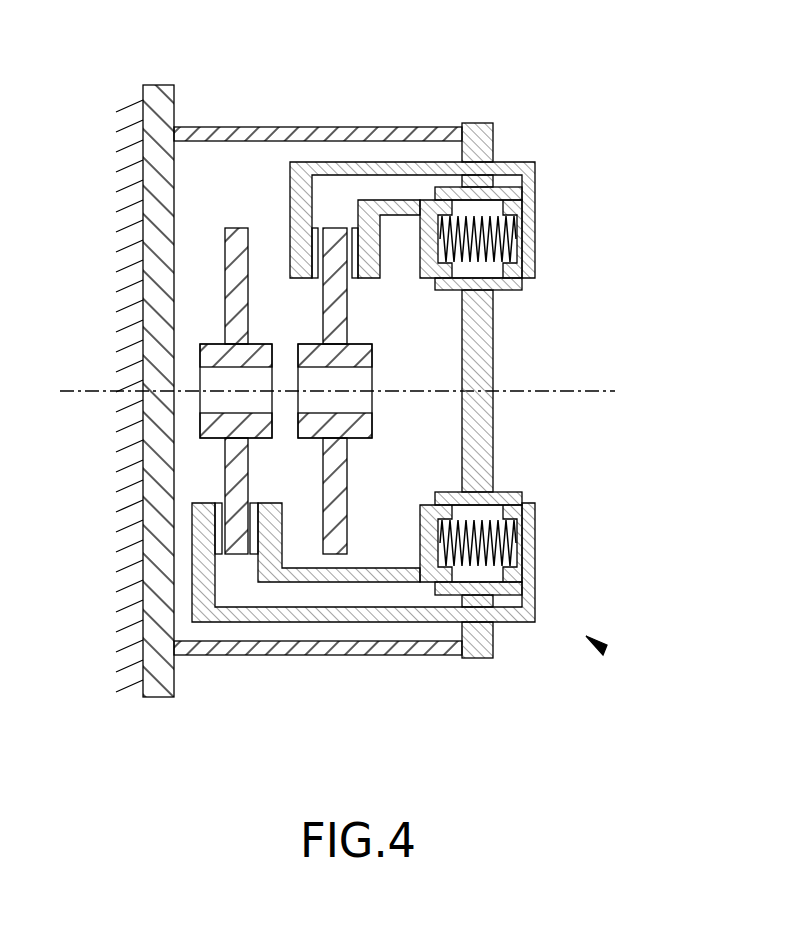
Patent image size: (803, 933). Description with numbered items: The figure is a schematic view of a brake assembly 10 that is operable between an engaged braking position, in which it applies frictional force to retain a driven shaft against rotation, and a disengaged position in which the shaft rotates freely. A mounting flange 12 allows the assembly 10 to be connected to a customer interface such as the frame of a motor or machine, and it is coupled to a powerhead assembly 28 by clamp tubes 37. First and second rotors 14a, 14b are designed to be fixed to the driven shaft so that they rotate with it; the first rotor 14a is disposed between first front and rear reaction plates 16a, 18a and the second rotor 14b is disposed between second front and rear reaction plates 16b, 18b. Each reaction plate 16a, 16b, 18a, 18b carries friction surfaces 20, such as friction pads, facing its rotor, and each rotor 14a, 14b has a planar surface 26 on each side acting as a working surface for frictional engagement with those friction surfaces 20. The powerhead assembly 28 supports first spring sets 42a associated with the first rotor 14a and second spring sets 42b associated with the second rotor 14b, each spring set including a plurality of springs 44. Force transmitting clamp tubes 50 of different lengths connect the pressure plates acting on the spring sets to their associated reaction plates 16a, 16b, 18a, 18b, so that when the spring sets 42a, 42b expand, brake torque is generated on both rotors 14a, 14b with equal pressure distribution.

The assembly 10 is at (603, 650).
The mounting flange 12 is at (161, 85).
The first rotor 14a is at (348, 462).
The second rotor 14b is at (250, 452).
The first front reaction plate 16a is at (380, 250).
The second front reaction plate 16b is at (273, 577).
The first rear reaction plate 18a is at (300, 240).
The second rear reaction plate 18b is at (204, 565).
The friction surfaces 20 is at (313, 278).
The planar surface 26 is at (223, 288).
The powerhead assembly 28 is at (495, 142).
The clamp tubes 37 is at (205, 127).
The first spring sets 42a is at (525, 268).
The second spring sets 42b is at (530, 527).
The springs 44 is at (513, 237).
The force transmitting clamp tubes 50 is at (352, 173).